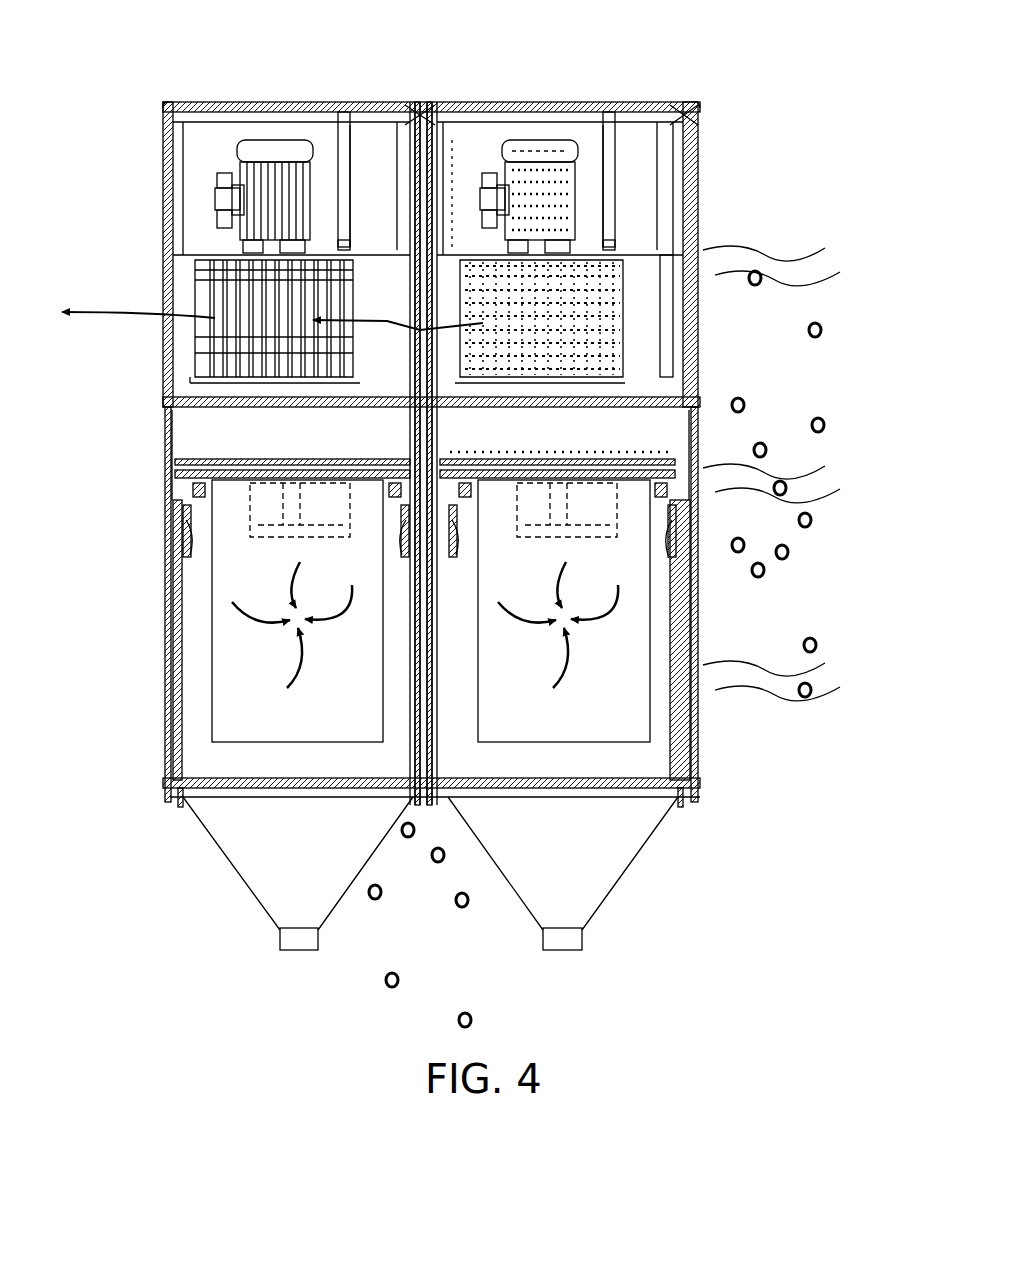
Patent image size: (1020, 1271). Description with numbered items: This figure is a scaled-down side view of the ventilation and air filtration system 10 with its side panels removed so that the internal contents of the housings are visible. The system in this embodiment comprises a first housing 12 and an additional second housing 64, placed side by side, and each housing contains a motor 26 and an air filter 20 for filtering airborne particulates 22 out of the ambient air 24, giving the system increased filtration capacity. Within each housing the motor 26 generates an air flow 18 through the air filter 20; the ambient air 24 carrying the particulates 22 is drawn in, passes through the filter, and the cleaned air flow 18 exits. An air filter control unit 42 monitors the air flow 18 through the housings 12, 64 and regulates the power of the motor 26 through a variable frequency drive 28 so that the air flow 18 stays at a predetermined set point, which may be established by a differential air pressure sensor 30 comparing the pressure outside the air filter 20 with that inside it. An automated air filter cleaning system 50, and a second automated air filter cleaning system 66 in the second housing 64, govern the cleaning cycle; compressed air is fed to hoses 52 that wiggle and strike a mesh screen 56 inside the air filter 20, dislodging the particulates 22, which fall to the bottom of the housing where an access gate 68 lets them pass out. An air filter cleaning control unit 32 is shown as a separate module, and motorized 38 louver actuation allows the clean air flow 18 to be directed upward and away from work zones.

The ventilation and air filtration system 10 is at (335, 48).
The first housing 12 is at (690, 100).
The air flow 18 is at (112, 310).
The air filter 20 is at (265, 733).
The particulates 22 is at (814, 420).
The ambient air 24 is at (735, 248).
The motor 26 is at (290, 137).
The variable frequency drive 28 is at (215, 200).
The differential air pressure sensor 30 is at (432, 104).
The air filter cleaning control unit 32 is at (386, 193).
The motorized louver drive 38 is at (195, 525).
The air filter control unit 42 is at (383, 243).
The automated air filter cleaning system 50 is at (623, 245).
The hoses 52 is at (330, 505).
The mesh screen 56 is at (266, 540).
The second housing 64 is at (195, 104).
The second automated air filter cleaning system 66 is at (358, 245).
The access gate 68 is at (280, 940).